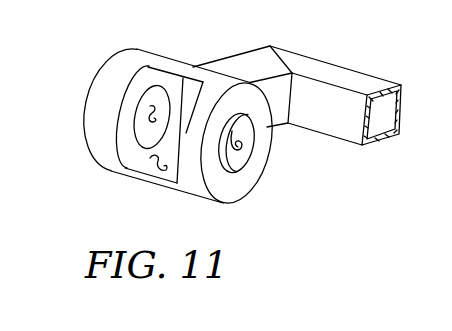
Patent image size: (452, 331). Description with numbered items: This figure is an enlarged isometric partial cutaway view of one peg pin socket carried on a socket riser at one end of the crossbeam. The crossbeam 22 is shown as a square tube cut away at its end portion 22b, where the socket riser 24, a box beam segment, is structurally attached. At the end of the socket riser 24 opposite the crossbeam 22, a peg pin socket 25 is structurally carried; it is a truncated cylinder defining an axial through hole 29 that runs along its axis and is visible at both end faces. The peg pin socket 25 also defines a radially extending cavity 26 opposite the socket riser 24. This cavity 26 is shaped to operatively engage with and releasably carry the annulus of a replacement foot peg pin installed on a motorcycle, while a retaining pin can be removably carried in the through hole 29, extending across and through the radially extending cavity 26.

The crossbeam 22 is at (343, 123).
The end portion of the crossbeam 22b is at (275, 60).
The socket riser 24 is at (237, 72).
The peg pin socket 25 is at (228, 188).
The radially extending cavity 26 is at (150, 165).
The axial through hole 29 is at (143, 112).